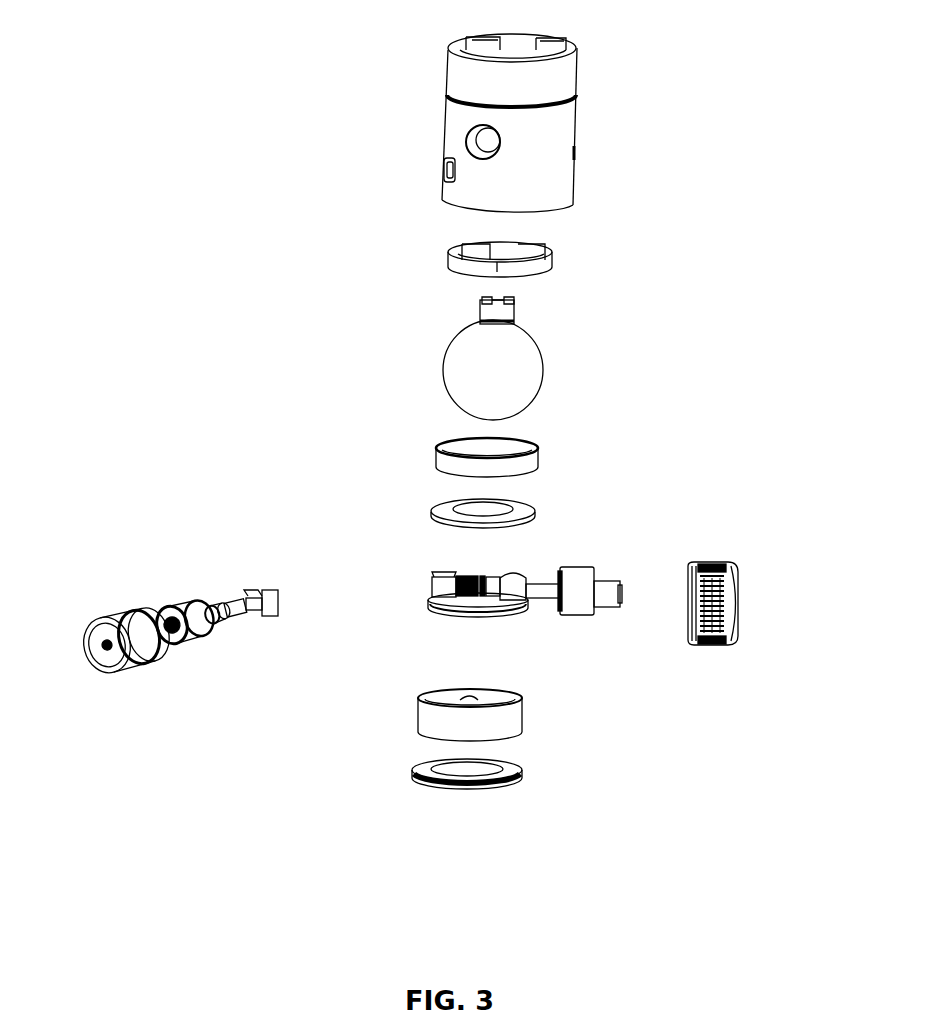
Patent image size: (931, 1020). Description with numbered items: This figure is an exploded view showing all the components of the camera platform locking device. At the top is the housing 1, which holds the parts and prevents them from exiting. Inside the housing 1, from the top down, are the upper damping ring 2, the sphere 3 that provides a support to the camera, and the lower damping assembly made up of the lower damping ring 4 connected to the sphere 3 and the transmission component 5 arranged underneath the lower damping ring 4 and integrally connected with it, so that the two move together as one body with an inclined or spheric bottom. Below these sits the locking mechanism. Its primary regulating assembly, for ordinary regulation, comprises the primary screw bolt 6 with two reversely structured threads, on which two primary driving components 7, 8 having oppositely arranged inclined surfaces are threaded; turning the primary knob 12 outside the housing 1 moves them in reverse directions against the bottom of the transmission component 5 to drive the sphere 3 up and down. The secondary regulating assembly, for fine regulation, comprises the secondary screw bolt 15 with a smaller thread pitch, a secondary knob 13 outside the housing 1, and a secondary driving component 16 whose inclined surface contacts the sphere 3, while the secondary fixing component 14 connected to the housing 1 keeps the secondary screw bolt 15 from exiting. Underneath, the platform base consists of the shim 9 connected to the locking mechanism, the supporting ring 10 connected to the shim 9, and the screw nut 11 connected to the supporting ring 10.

The housing 1 is at (470, 87).
The upper damping ring 2 is at (457, 262).
The sphere 3 is at (462, 372).
The lower damping ring 4 is at (443, 462).
The transmission component 5 is at (438, 508).
The primary screw bolt 6 is at (468, 578).
The primary driving component 7 is at (440, 586).
The primary driving component 8 is at (515, 588).
The shim 9 is at (455, 616).
The supporting ring 10 is at (437, 722).
The screw nut 11 is at (425, 775).
The primary knob 12 is at (735, 575).
The secondary knob 13 is at (118, 622).
The secondary fixing component 14 is at (177, 608).
The secondary screw bolt 15 is at (245, 603).
The secondary driving component 16 is at (257, 590).